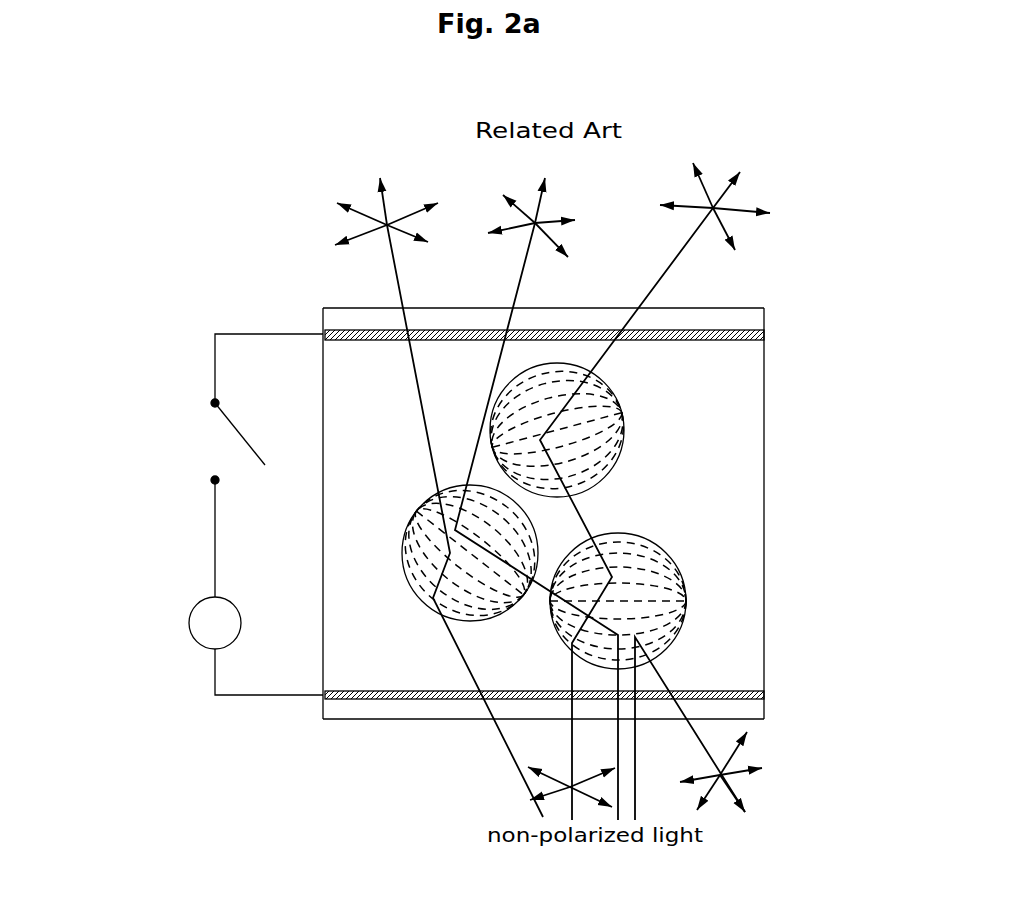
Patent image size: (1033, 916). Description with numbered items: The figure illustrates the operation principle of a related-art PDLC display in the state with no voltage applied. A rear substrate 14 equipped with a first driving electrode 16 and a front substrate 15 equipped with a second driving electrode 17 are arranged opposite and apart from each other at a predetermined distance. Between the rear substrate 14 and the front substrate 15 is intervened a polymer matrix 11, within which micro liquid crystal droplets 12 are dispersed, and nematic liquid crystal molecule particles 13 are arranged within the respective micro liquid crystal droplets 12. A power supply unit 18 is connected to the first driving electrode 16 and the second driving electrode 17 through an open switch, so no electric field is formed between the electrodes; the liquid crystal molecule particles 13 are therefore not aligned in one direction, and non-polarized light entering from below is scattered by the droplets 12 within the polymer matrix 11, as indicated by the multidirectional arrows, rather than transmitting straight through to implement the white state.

The polymer matrix 11 is at (760, 450).
The micro liquid crystal droplets 12 is at (643, 538).
The nematic liquid crystal molecule particles 13 is at (615, 442).
The rear substrate 14 is at (418, 710).
The front substrate 15 is at (459, 318).
The first driving electrode 16 is at (765, 695).
The second driving electrode 17 is at (765, 335).
The power supply unit 18 is at (189, 623).